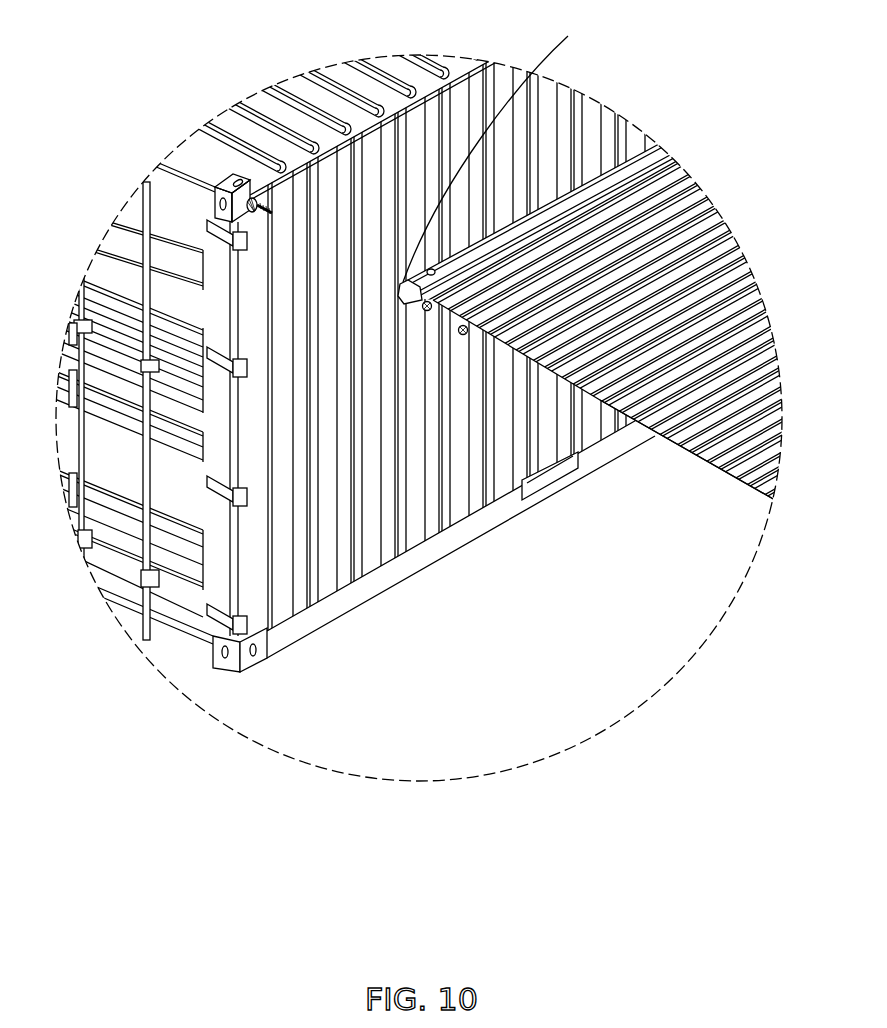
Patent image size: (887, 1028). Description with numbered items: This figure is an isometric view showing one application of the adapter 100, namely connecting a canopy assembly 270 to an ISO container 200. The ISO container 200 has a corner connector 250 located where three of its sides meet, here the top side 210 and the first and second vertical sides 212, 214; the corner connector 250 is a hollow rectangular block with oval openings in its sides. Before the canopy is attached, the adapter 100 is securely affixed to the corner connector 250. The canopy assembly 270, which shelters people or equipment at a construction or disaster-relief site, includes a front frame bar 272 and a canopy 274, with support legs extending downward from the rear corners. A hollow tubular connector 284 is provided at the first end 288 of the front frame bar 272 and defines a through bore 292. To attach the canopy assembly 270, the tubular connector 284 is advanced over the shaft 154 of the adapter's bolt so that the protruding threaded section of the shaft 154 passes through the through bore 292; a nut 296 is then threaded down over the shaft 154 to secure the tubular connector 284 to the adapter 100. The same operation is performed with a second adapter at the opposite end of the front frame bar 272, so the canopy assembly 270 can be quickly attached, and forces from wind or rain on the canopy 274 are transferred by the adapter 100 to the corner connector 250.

The adapter 100 is at (237, 176).
The shaft 154 is at (268, 214).
The ISO container 200 is at (360, 361).
The top side 210 is at (396, 62).
The first vertical side 212 is at (110, 258).
The second vertical side 214 is at (546, 103).
The corner connector 250 is at (217, 204).
The canopy assembly 270 is at (700, 220).
The front frame bar 272 is at (634, 158).
The canopy 274 is at (763, 298).
The tubular connector 284 is at (502, 153).
The first end 288 is at (430, 266).
The through bore 292 is at (428, 311).
The nut 296 is at (467, 334).